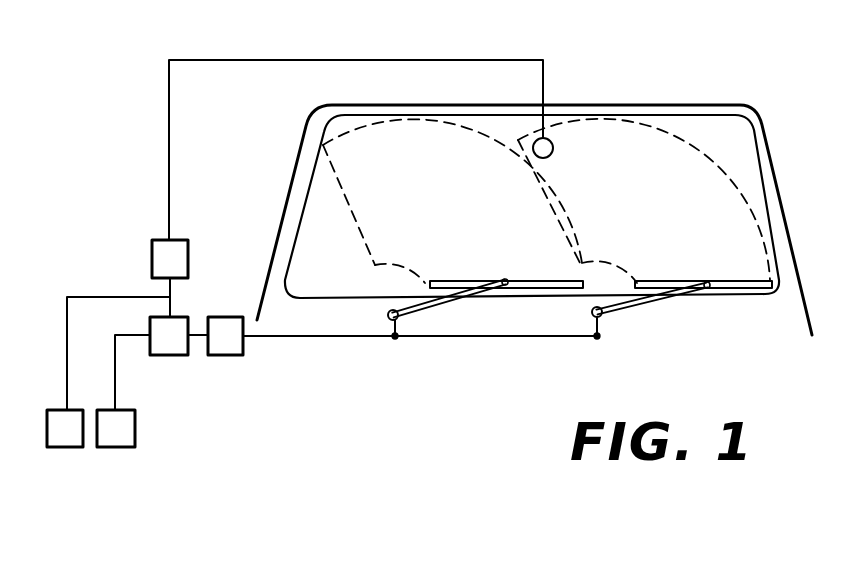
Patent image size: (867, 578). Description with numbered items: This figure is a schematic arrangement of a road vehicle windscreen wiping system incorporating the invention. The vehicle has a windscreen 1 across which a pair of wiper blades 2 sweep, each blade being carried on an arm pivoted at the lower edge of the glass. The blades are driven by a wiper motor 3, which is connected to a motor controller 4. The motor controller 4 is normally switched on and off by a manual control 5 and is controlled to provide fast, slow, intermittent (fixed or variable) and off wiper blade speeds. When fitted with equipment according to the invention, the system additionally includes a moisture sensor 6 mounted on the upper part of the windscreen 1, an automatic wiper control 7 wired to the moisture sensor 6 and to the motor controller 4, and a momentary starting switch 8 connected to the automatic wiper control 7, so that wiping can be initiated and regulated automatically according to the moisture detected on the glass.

The windscreen 1 is at (740, 152).
The wiper blades 2 is at (540, 289).
The wiper motor 3 is at (225, 356).
The motor controller 4 is at (177, 356).
The manual control 5 is at (118, 447).
The moisture sensor 6 is at (551, 141).
The automatic wiper control 7 is at (158, 260).
The momentary starting switch 8 is at (68, 447).